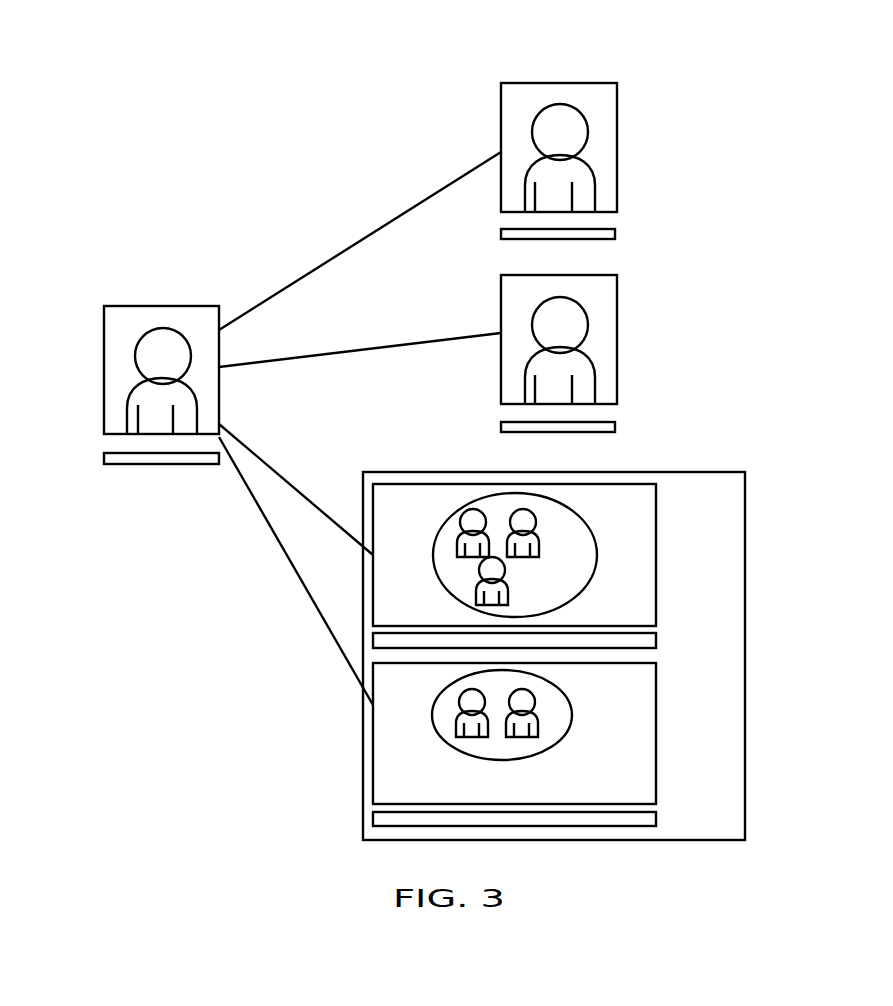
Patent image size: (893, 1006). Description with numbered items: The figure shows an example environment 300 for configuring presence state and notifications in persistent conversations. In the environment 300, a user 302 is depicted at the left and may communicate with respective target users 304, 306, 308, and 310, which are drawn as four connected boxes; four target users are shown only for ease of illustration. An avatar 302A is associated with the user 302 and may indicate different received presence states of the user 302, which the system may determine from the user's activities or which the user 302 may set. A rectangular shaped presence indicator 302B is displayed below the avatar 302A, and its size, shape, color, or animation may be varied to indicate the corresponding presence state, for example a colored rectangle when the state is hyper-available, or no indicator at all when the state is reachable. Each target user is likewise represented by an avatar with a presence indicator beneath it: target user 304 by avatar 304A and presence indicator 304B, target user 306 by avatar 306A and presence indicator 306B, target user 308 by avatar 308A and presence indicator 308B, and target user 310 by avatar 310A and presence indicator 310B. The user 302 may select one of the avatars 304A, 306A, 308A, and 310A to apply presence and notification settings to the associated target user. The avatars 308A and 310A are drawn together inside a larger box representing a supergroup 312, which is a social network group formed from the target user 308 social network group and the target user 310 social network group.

The environment 300 is at (72, 62).
The user 302 is at (137, 350).
The avatar 302A is at (104, 372).
The presence indicator 302B is at (104, 458).
The target user 304 is at (587, 121).
The avatar 304A is at (617, 145).
The presence indicator 304B is at (615, 234).
The target user 306 is at (587, 313).
The avatar 306A is at (617, 337).
The presence indicator 306B is at (615, 427).
The target user 308 is at (588, 521).
The avatar 308A is at (656, 551).
The presence indicator 308B is at (656, 641).
The target user 310 is at (564, 694).
The avatar 310A is at (656, 739).
The presence indicator 310B is at (656, 817).
The supergroup 312 is at (745, 497).